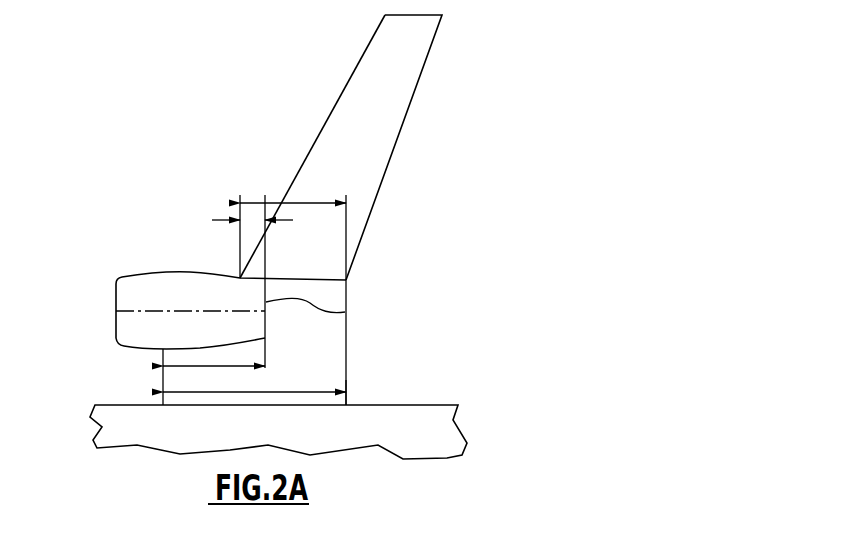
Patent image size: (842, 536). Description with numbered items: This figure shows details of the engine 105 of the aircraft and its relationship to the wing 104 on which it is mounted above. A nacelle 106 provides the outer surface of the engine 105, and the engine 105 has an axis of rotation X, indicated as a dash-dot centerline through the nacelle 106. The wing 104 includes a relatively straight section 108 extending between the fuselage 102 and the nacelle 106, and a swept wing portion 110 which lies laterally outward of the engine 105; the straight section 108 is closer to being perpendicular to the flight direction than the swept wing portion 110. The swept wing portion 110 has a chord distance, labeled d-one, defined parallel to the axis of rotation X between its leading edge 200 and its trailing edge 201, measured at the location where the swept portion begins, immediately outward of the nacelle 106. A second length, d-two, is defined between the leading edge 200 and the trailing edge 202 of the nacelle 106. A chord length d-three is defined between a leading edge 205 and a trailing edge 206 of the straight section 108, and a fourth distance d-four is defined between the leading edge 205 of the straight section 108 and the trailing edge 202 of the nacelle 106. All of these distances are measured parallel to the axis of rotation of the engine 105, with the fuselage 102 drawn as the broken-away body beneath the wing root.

The fuselage 102 is at (118, 430).
The wings 104 is at (323, 157).
The engine 105 is at (165, 222).
The nacelle 106 is at (135, 283).
The relatively straight section 108 is at (333, 356).
The swept wing portion 110 is at (338, 101).
The leading edge 200 is at (240, 277).
The trailing edge 201 is at (347, 282).
The trailing edge 202 is at (345, 312).
The leading edge 205 is at (160, 382).
The trailing edge 206 is at (350, 394).